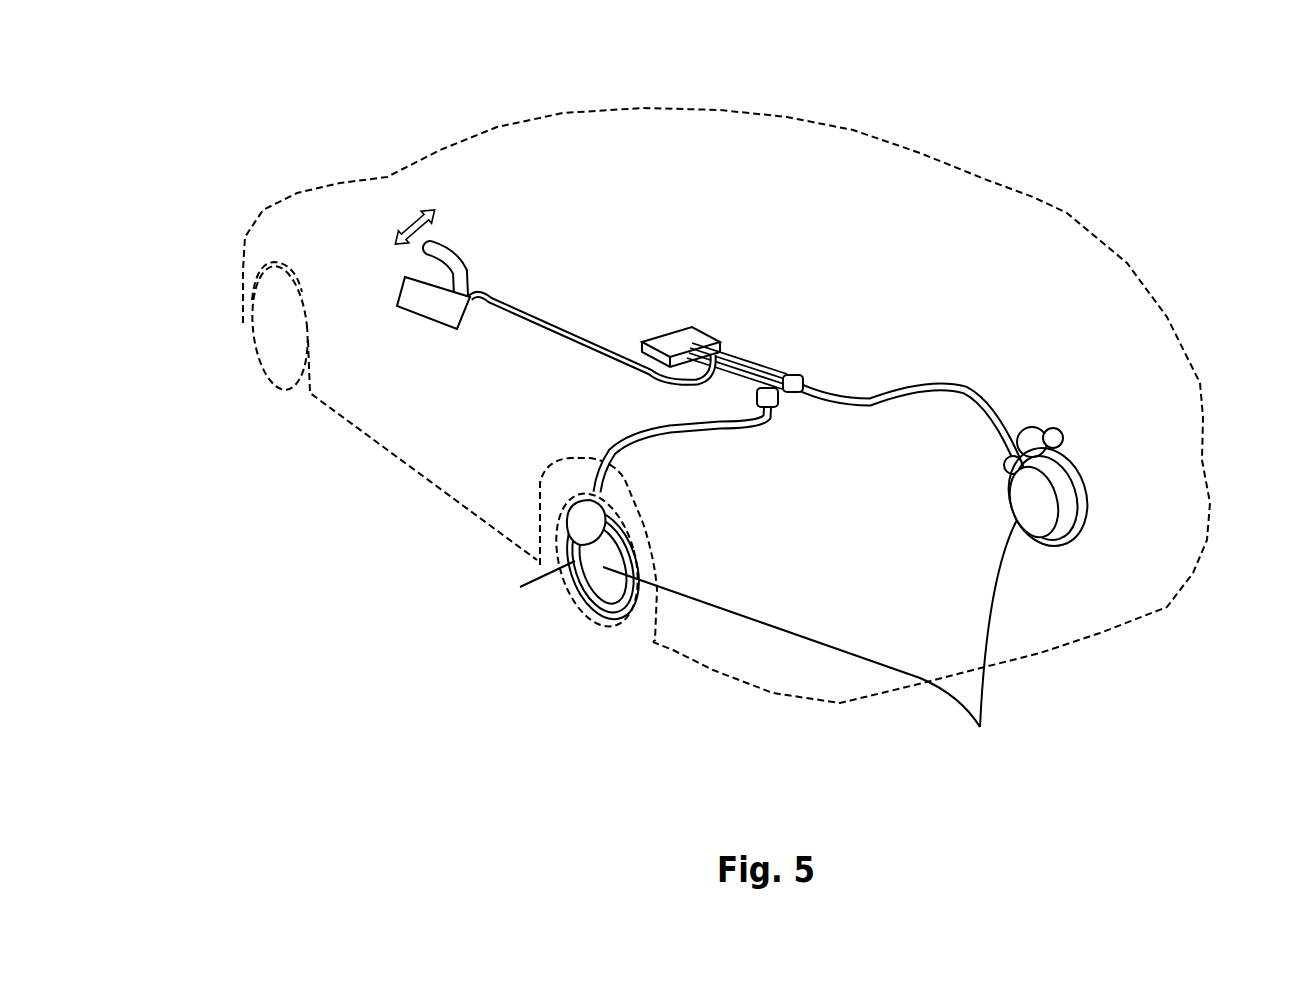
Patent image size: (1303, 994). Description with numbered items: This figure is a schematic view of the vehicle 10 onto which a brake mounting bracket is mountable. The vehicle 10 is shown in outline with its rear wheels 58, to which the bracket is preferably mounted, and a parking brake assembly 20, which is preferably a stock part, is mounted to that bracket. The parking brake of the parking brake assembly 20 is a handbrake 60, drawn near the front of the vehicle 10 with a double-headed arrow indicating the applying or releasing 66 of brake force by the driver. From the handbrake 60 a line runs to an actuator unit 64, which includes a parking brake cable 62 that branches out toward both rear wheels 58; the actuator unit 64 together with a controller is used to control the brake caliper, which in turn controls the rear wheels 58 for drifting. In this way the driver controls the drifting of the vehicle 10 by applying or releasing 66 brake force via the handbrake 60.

The vehicle 10 is at (1133, 263).
The parking brake assembly 20 is at (818, 635).
The rear wheels 58 is at (567, 563).
The handbrake 60 is at (397, 305).
The parking brake cable 62 is at (750, 433).
The actuator unit 64 is at (697, 333).
The applying or releasing 66 is at (424, 211).